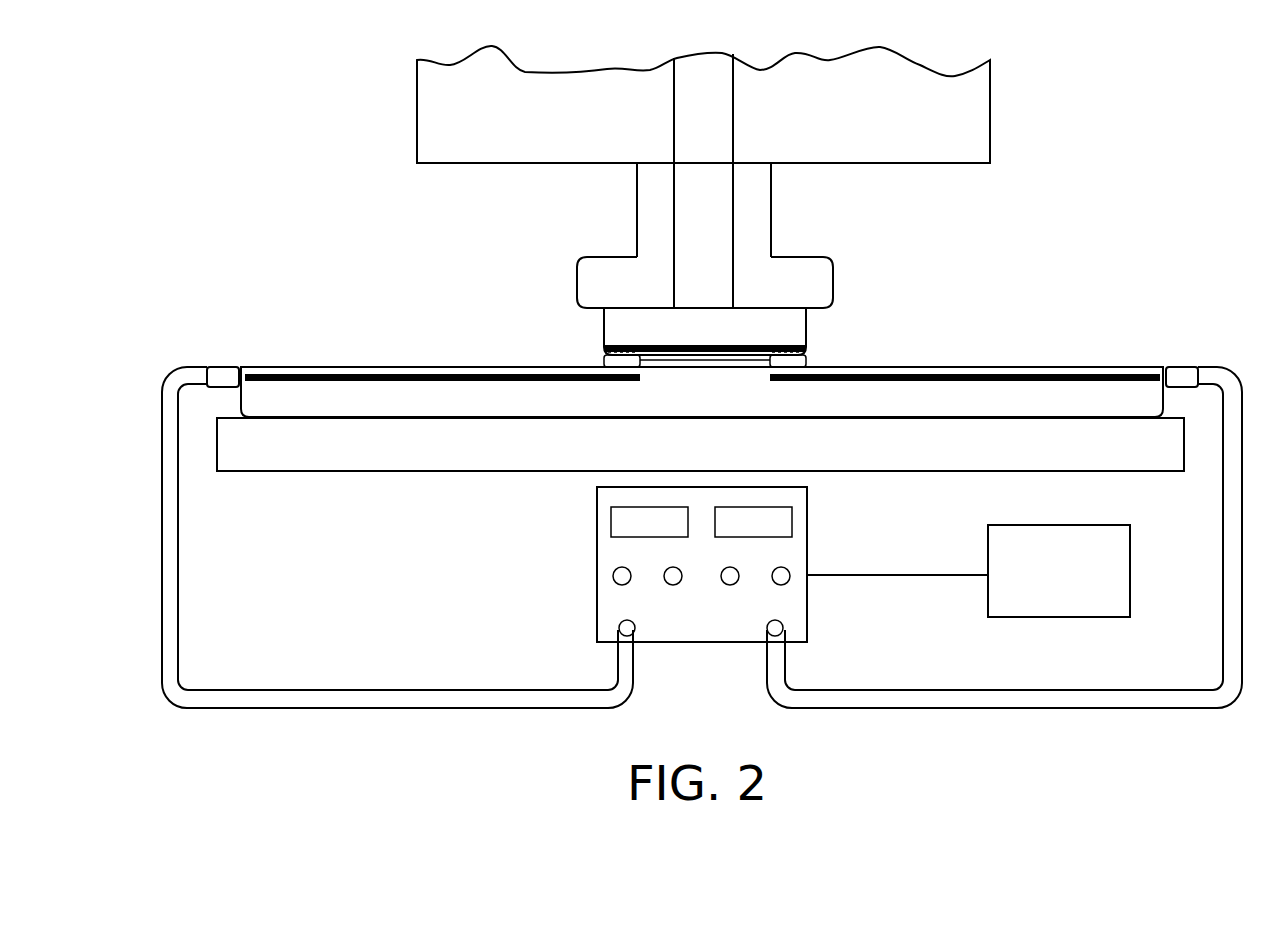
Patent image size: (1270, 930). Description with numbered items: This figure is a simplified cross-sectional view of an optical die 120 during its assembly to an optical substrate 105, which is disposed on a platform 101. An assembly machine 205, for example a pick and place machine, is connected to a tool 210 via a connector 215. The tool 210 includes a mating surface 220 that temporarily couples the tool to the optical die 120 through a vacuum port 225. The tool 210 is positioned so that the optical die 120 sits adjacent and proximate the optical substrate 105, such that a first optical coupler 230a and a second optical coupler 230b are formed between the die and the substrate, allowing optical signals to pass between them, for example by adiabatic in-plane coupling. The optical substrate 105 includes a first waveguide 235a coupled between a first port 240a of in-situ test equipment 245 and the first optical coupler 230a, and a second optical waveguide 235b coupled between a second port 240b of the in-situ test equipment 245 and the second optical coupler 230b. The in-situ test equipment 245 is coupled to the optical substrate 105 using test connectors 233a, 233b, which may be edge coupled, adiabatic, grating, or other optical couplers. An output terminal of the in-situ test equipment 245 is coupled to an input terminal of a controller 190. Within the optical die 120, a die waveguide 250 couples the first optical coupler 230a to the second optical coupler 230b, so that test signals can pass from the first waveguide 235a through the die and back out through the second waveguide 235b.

The assembly machine 205 is at (983, 91).
The connector 215 is at (751, 166).
The tool 210 is at (766, 222).
The mating surface 220 is at (577, 311).
The vacuum port 225 is at (724, 273).
The die waveguide 250 is at (680, 344).
The optical die 120 is at (800, 329).
The first optical coupler 230a is at (590, 358).
The second optical coupler 230b is at (815, 358).
The optical substrate 105 is at (1058, 365).
The first waveguide 235a is at (320, 373).
The second optical waveguide 235b is at (1000, 373).
The test connector 233a is at (220, 364).
The test connector 233b is at (1172, 364).
The platform 101 is at (372, 462).
The in-situ test equipment 245 is at (790, 556).
The first port 240a is at (623, 620).
The second port 240b is at (780, 620).
The controller 190 is at (1060, 605).